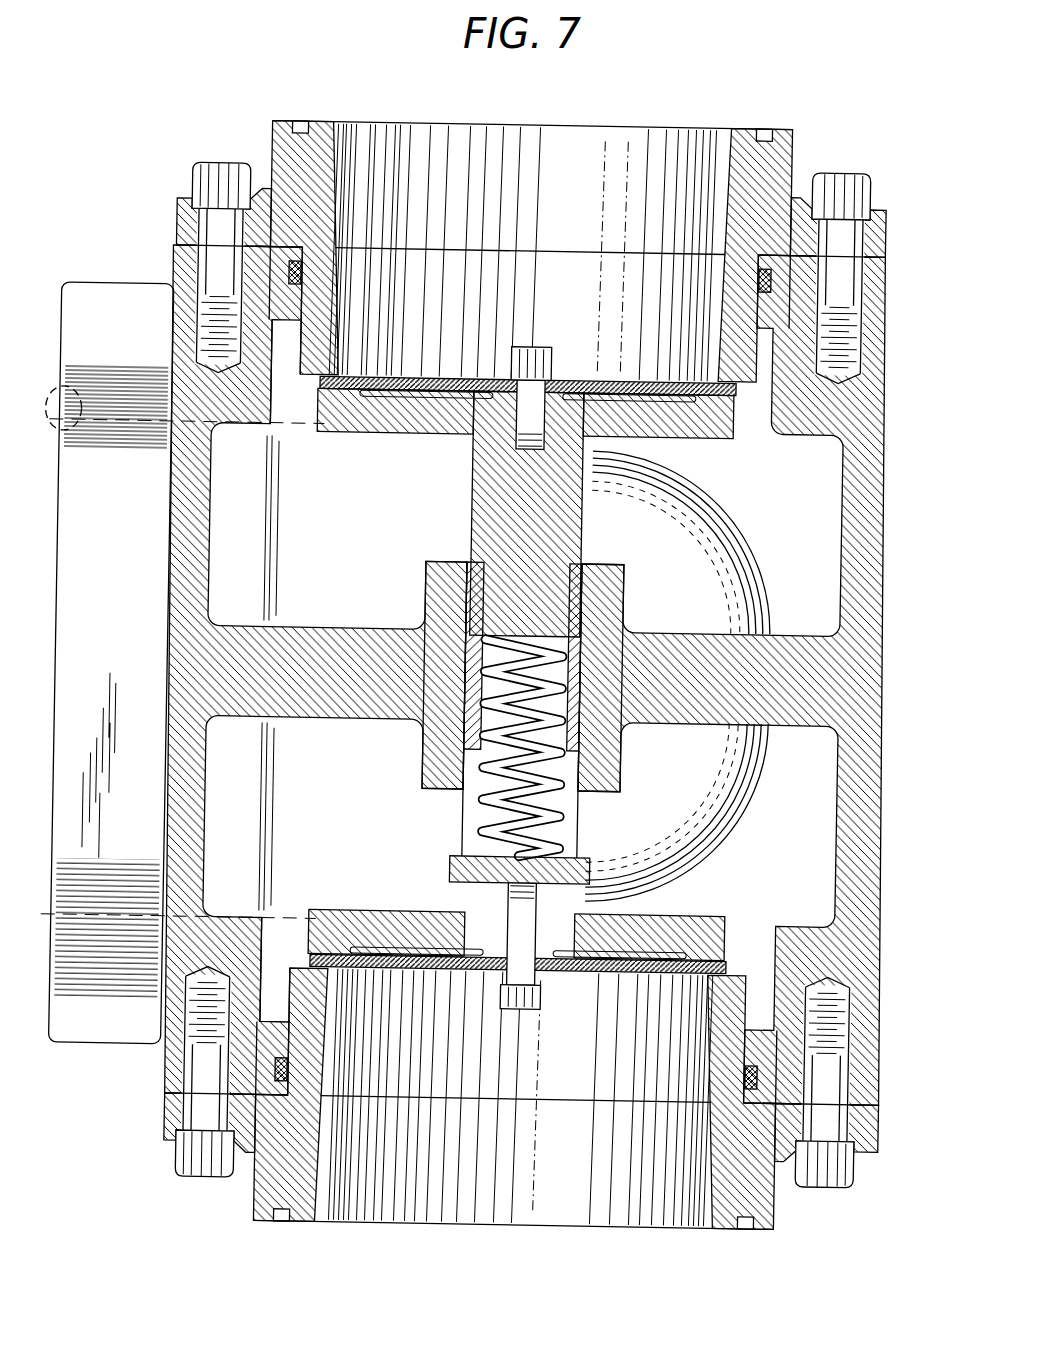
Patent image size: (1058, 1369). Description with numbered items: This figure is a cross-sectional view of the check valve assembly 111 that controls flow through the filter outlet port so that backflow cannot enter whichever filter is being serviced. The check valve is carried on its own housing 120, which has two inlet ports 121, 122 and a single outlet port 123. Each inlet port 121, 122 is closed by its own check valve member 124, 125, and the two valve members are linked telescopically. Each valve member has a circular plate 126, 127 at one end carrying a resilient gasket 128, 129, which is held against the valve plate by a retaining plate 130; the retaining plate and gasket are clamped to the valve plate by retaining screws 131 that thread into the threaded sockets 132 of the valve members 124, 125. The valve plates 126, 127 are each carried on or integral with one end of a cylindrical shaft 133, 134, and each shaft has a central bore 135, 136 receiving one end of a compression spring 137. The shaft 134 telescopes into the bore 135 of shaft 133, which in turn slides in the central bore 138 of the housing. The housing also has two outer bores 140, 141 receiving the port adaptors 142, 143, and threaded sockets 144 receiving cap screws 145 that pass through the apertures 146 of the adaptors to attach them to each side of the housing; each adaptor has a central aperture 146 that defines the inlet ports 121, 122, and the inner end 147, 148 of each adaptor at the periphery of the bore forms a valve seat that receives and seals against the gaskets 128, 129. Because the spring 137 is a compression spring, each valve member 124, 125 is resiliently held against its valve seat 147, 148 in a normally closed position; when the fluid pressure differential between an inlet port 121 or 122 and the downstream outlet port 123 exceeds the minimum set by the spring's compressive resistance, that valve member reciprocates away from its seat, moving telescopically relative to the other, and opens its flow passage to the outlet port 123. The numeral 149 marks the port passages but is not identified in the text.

The check valve assembly 111 is at (491, 678).
The housing 120 is at (874, 838).
The inlet port 121 is at (724, 1210).
The inlet port 122 is at (716, 150).
The outlet port 123 is at (104, 663).
The check valve member 124 is at (348, 908).
The check valve member 125 is at (346, 445).
The circular plate 126 is at (724, 933).
The circular plate 127 is at (687, 436).
The resilient gasket 128 is at (654, 962).
The resilient gasket 129 is at (703, 400).
The retaining plate 130 is at (576, 379).
The retaining screw 131 is at (541, 346).
The threaded socket 132 is at (513, 437).
The cylindrical shaft 133 is at (599, 798).
The cylindrical shaft 134 is at (478, 538).
The central bore 135 is at (470, 808).
The central bore 136 is at (486, 651).
The compression spring 137 is at (558, 816).
The central bore 138 is at (593, 724).
The outer bore 140 is at (758, 1040).
The outer bore 141 is at (285, 258).
The port adaptor 142 is at (316, 1174).
The port adaptor 143 is at (311, 178).
The threaded socket 144 is at (838, 352).
The cap screw 145 is at (831, 166).
The aperture 146 is at (835, 244).
The valve seat 147 is at (322, 981).
The valve seat 148 is at (293, 372).
The flow port 149 is at (538, 191).